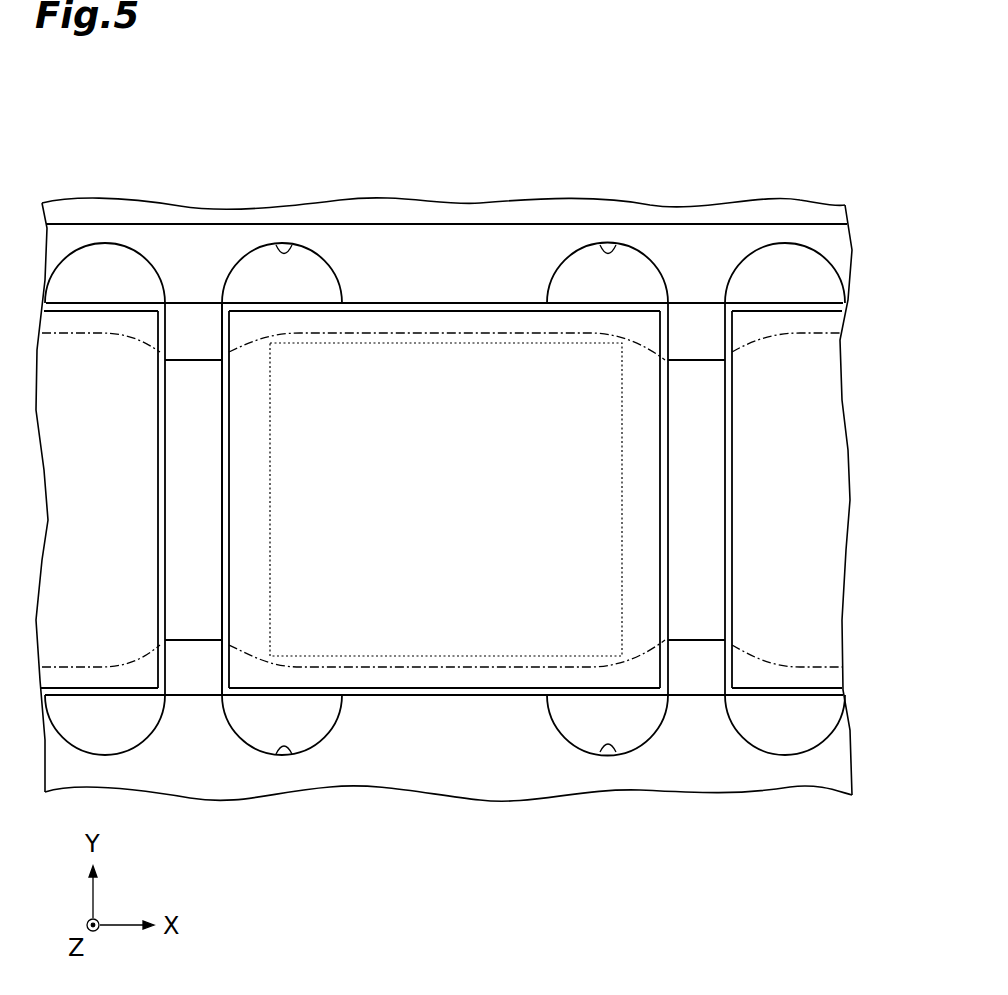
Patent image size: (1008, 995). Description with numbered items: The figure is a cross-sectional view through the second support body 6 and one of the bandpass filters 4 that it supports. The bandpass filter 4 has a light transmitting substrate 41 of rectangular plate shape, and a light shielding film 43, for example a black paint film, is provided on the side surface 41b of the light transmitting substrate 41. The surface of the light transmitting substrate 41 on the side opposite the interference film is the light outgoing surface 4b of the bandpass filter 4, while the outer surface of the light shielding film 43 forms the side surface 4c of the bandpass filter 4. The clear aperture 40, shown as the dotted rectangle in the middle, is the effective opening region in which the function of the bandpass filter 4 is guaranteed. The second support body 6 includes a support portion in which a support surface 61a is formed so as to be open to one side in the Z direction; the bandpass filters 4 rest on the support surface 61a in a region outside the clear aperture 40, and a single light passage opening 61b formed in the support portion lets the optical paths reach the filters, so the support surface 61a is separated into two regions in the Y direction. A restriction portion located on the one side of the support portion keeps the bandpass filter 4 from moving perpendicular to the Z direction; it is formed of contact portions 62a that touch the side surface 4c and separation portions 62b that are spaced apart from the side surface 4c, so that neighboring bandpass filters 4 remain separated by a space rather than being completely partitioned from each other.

The bandpass filter 4 is at (82, 303).
The clear aperture 40 is at (395, 345).
The light transmitting substrate 41 is at (500, 695).
The side surface of the light transmitting substrate 41b is at (222, 492).
The light shielding film 43 is at (670, 448).
The light outgoing surface 4b is at (445, 688).
The side surface of the bandpass filter 4c is at (670, 503).
The second support body 6 is at (393, 200).
The support surface 61a is at (493, 322).
The light passage opening 61b is at (792, 334).
The contact portion 62a is at (545, 300).
The separation portion 62b is at (282, 243).